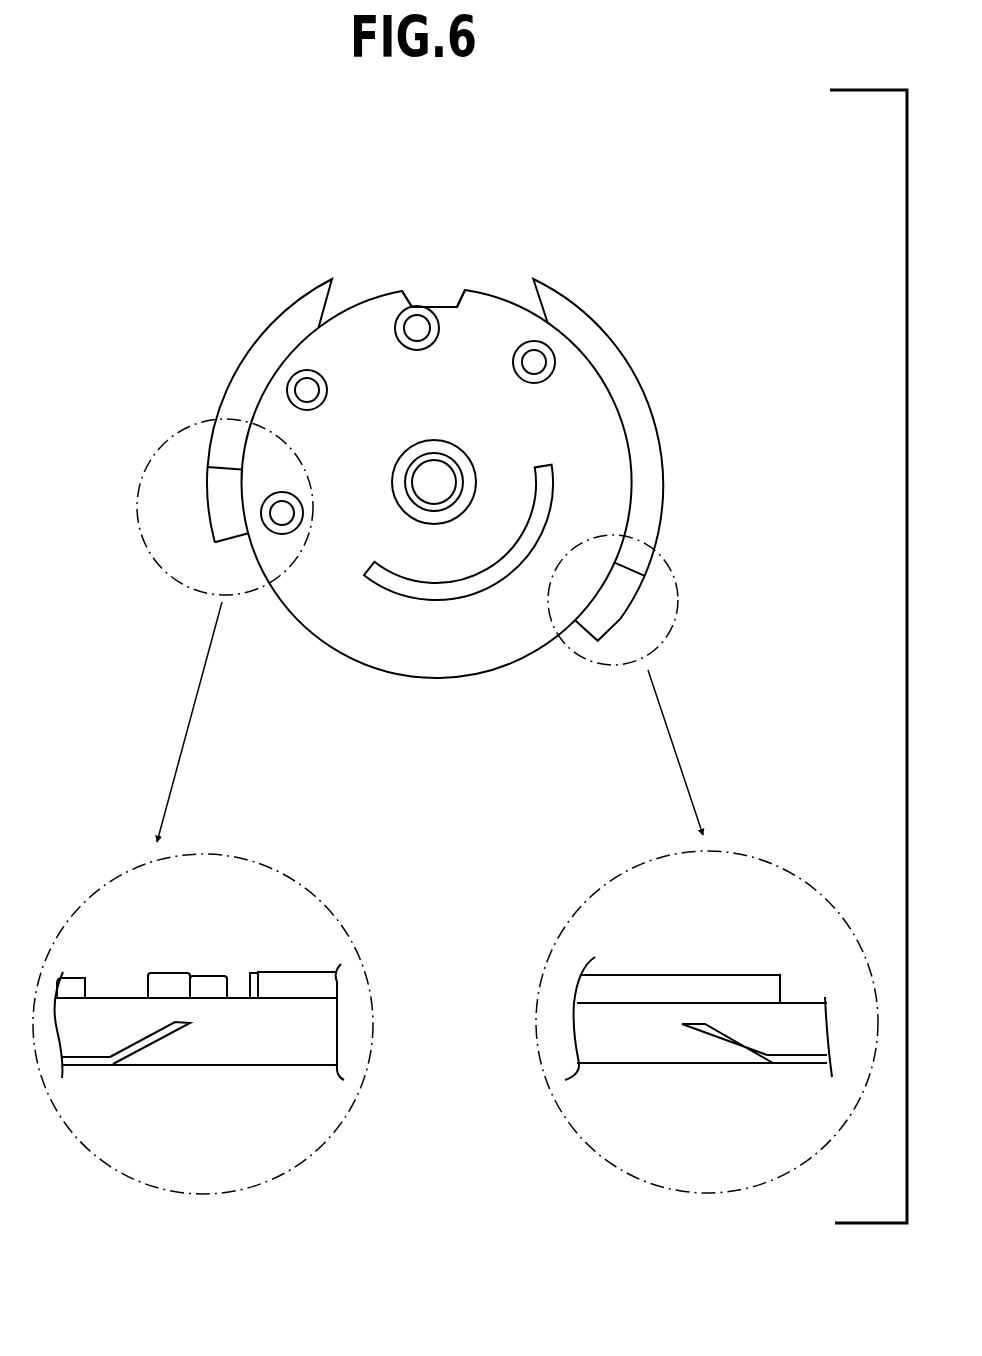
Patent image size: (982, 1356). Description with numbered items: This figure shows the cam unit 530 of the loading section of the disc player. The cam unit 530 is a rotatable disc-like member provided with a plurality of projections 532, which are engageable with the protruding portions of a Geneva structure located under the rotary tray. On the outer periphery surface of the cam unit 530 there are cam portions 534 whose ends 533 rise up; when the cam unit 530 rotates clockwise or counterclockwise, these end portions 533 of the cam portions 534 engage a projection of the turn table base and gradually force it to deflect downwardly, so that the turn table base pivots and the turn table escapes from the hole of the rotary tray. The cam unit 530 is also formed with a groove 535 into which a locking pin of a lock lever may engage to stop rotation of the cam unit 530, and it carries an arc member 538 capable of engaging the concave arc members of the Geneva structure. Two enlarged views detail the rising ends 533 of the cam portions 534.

The cam unit 530 is at (612, 290).
The projections 532 is at (432, 307).
The ends of cam portions 533 is at (213, 490).
The cam portions 534 is at (222, 365).
The groove 535 is at (415, 304).
The arc member 538 is at (483, 587).